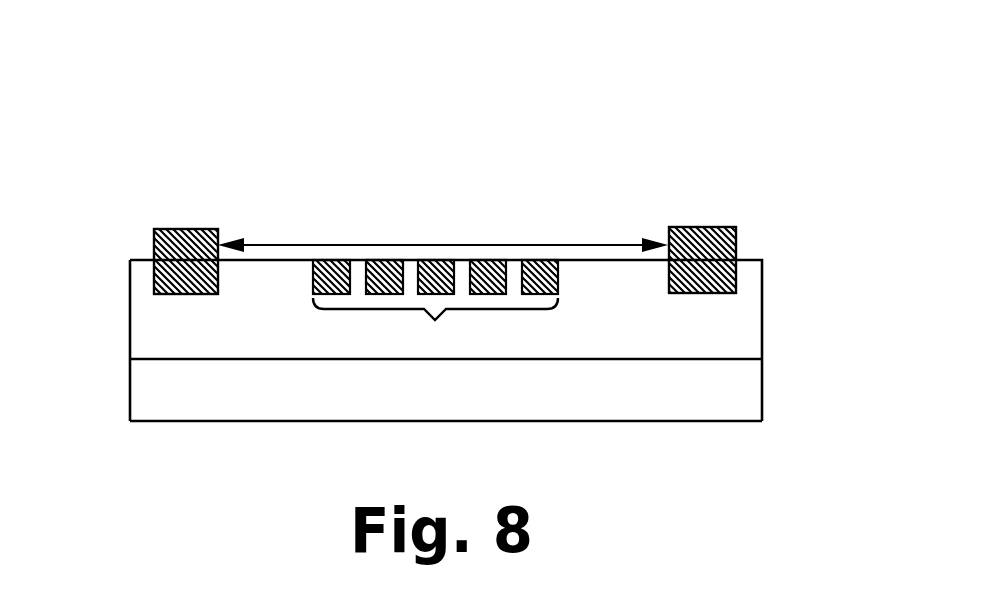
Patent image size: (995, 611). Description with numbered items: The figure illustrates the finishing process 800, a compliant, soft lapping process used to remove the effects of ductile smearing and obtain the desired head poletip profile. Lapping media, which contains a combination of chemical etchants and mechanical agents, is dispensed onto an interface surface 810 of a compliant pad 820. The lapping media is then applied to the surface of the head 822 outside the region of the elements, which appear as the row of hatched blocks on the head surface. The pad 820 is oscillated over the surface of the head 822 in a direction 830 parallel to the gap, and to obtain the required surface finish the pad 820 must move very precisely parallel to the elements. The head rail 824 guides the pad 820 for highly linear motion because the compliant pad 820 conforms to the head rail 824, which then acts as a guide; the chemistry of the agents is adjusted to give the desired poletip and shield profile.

The finishing process 800 is at (500, 126).
The interface surface 810 is at (740, 258).
The compliant pad 820 is at (735, 232).
The head 822 is at (760, 428).
The head rail 824 is at (130, 297).
The direction 830 is at (443, 227).